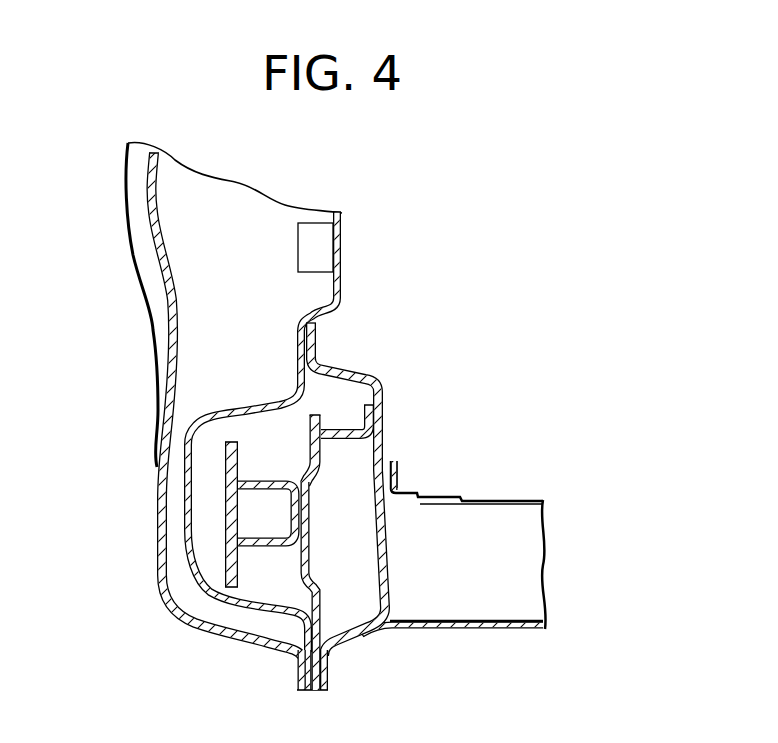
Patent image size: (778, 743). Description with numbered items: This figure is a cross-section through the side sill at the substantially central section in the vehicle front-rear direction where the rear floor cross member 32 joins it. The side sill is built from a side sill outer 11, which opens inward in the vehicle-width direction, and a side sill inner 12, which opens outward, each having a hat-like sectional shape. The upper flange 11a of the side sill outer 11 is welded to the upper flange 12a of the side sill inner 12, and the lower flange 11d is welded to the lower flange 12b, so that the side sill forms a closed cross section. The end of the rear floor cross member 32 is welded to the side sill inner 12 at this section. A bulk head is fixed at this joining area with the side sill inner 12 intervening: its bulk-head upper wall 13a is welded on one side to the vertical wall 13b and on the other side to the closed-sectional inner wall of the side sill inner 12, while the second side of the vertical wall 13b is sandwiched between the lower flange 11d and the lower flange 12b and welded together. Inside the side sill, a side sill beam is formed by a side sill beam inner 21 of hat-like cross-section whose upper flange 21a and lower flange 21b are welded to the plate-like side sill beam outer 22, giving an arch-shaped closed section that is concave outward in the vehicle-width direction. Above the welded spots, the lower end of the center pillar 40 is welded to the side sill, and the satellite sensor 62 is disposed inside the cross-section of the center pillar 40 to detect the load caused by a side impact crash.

The center pillar 40 is at (212, 252).
The satellite sensor 62 is at (318, 245).
The side sill outer 11 is at (214, 428).
The upper flange of side sill outer 11a is at (297, 337).
The lower flange of side sill outer 11d is at (300, 678).
The side sill inner 12 is at (394, 513).
The upper flange of side sill inner 12a is at (317, 338).
The lower flange of side sill inner 12b is at (328, 688).
The bulk-head upper wall 13a is at (341, 432).
The vertical wall 13b is at (318, 581).
The side sill beam inner 21 is at (278, 552).
The upper flange of side sill beam inner 21a is at (225, 450).
The lower flange of side sill beam inner 21b is at (237, 580).
The side sill beam outer 22 is at (222, 539).
The rear floor cross member 32 is at (513, 553).